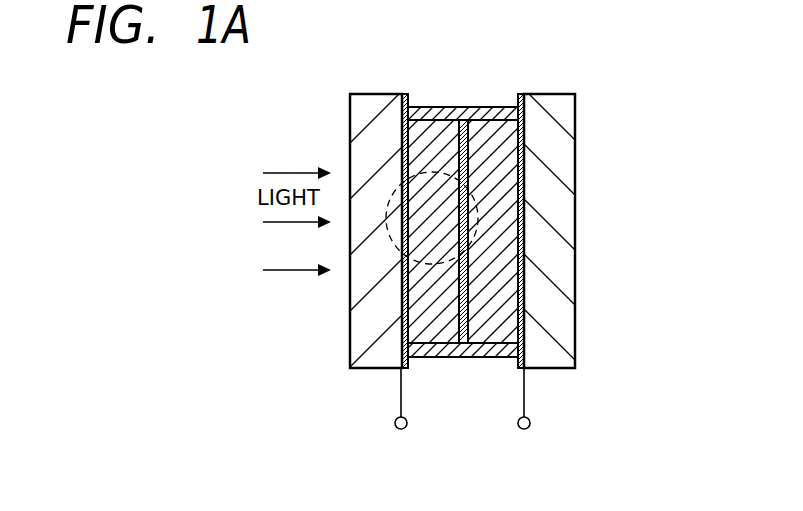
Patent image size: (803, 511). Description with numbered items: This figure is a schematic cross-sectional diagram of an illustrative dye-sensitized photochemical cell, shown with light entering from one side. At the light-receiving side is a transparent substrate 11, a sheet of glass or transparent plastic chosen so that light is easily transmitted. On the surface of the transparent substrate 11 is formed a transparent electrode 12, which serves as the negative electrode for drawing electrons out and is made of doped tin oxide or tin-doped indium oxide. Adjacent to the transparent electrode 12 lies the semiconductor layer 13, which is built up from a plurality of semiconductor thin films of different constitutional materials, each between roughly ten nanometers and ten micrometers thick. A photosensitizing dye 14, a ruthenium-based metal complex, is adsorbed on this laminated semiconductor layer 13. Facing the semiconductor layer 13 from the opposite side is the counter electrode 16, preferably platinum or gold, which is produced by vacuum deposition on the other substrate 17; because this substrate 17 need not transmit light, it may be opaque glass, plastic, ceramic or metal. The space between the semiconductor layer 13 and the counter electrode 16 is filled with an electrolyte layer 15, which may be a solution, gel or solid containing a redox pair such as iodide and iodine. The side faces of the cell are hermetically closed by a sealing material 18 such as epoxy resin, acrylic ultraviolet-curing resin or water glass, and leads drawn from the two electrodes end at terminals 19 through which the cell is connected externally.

The transparent substrate 11 is at (370, 103).
The transparent electrode 12 is at (402, 103).
The semiconductor layer 13 is at (440, 142).
The photosensitizing dye 14 is at (472, 177).
The electrolyte layer 15 is at (507, 232).
The counter electrode 16 is at (520, 280).
The substrate 17 is at (553, 355).
The sealing material 18 is at (477, 107).
The terminal 19 is at (531, 423).